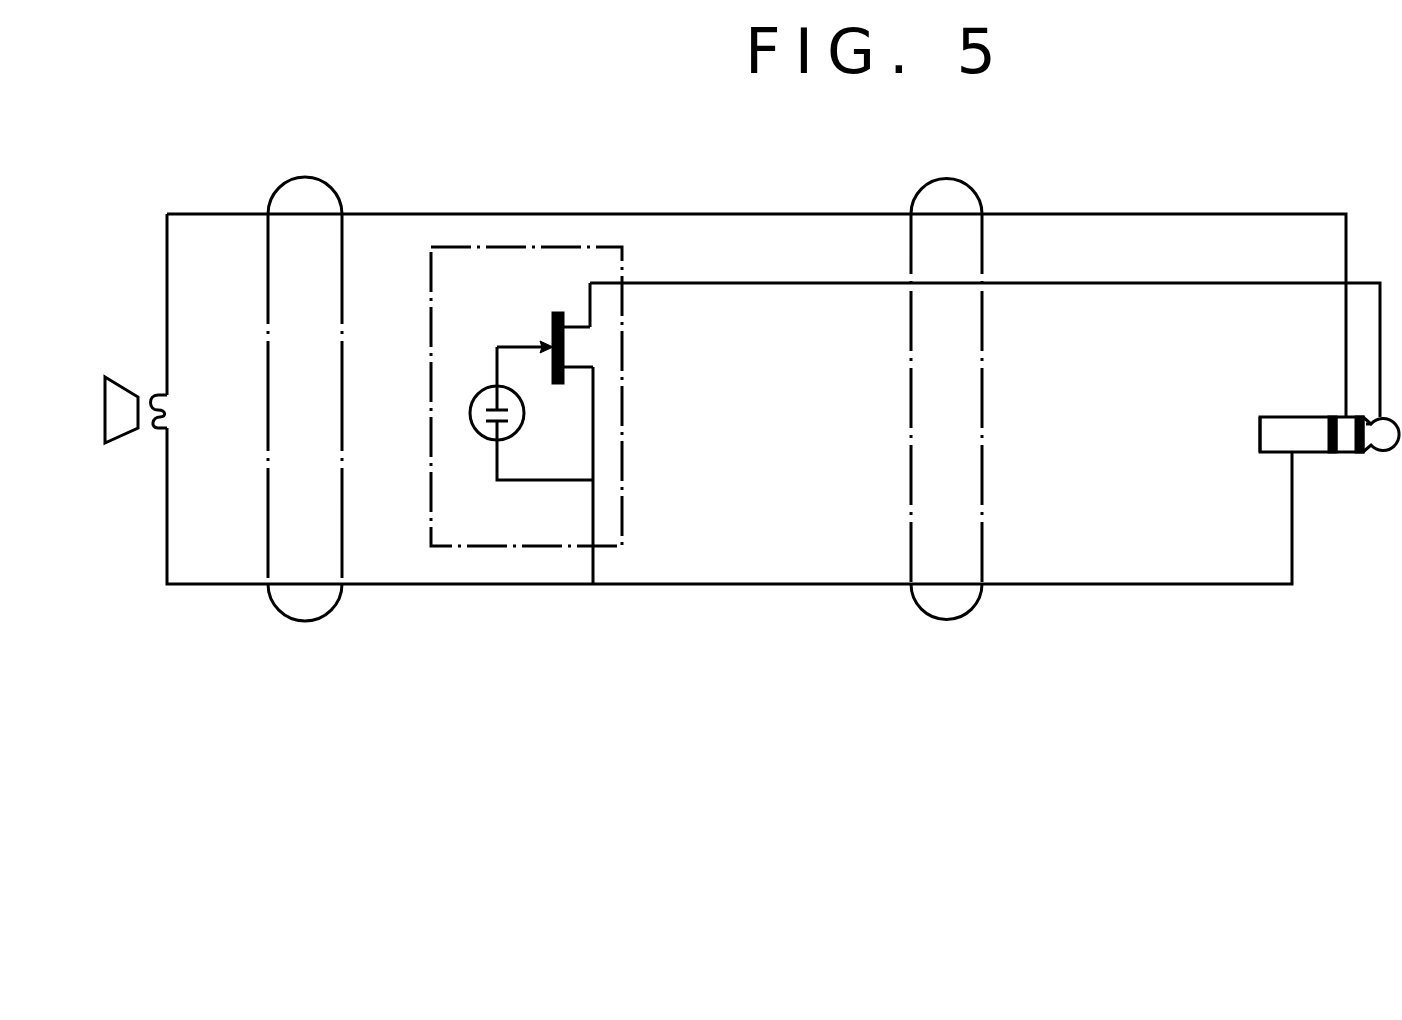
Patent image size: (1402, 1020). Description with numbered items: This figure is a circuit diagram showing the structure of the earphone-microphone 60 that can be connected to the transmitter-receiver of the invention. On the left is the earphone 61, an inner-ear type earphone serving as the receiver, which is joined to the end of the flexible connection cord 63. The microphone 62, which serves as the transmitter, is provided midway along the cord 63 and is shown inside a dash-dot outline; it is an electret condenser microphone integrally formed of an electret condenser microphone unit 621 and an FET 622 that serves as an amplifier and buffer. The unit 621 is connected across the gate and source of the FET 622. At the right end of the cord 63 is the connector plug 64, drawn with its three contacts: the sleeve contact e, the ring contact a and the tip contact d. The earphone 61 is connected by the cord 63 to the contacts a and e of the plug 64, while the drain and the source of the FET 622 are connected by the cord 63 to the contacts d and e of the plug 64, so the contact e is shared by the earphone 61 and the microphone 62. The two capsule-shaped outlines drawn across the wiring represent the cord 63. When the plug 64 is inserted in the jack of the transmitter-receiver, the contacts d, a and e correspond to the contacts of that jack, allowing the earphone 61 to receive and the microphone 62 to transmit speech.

The earphone-microphone 60 is at (1138, 598).
The earphone 61 is at (121, 445).
The microphone 62 is at (526, 463).
The electret condenser microphone unit 621 is at (490, 440).
The FET 622 is at (551, 322).
The connection cord 63 is at (333, 608).
The connector plug 64 is at (1284, 416).
The contact e is at (1277, 453).
The contact a is at (1346, 453).
The contact d is at (1384, 453).